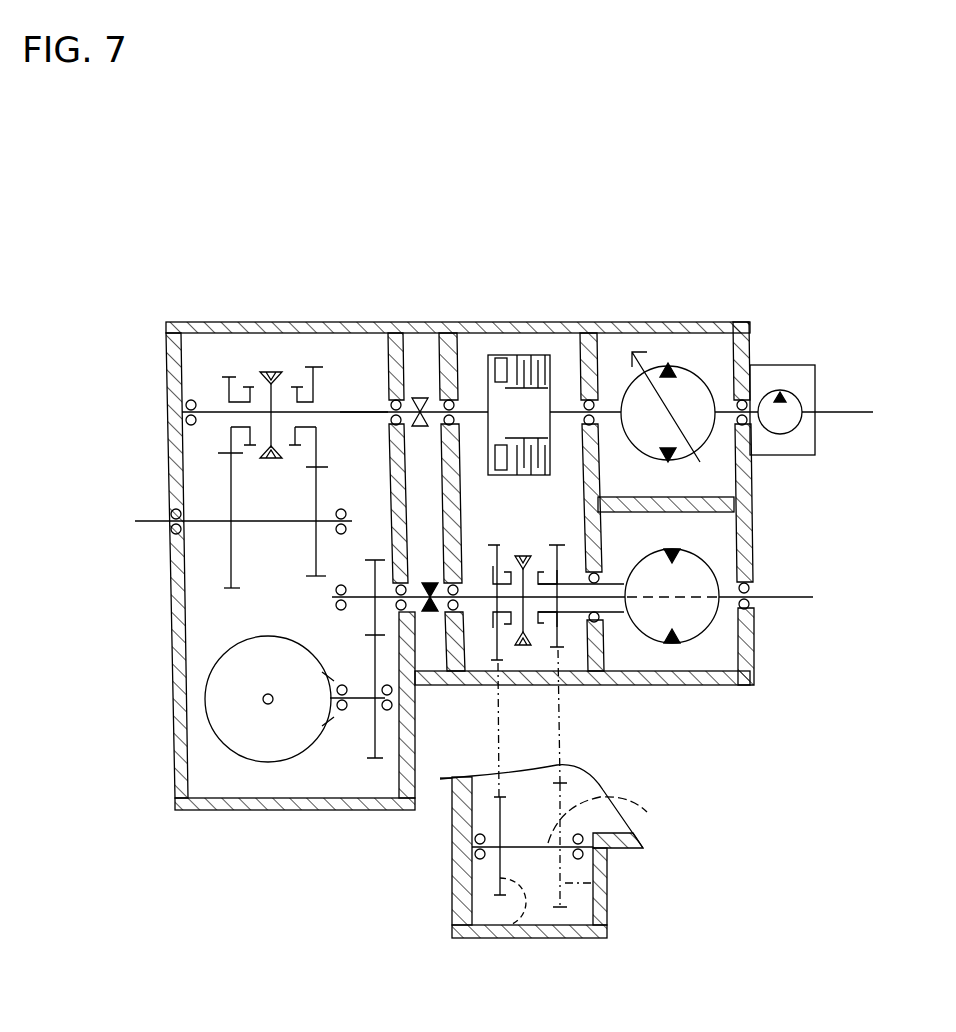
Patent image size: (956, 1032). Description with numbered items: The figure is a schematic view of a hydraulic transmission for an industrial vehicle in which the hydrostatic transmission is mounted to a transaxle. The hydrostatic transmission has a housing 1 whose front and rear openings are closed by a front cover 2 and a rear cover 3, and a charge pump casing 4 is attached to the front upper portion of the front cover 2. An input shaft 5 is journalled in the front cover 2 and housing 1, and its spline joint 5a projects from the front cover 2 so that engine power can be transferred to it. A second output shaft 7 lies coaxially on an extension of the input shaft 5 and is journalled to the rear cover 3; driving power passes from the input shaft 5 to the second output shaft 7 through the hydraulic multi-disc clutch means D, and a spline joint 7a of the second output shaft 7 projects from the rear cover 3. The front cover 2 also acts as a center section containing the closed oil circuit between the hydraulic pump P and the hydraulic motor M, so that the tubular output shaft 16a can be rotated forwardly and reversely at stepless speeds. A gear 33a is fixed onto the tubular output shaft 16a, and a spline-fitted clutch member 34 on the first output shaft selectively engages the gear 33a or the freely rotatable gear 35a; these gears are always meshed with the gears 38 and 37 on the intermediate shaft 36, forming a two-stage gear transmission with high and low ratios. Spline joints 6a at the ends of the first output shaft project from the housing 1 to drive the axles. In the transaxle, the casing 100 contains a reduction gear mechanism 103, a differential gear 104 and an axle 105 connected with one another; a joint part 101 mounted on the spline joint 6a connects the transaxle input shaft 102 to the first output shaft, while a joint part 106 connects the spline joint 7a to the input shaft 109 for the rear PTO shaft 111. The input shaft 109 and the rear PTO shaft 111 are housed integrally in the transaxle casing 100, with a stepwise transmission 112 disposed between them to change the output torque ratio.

The housing 1 is at (570, 330).
The front cover 2 is at (742, 330).
The rear cover 3 is at (444, 360).
The charge pump casing 4 is at (790, 365).
The input shaft 5 is at (605, 400).
The spline joint 5a is at (849, 408).
The spline joint 6a is at (445, 615).
The second output shaft 7 is at (470, 400).
The spline joint 7a is at (420, 396).
The hydraulic pump P is at (680, 362).
The hydraulic motor M is at (712, 568).
The clutch means D is at (525, 340).
The tubular output shaft 16a is at (612, 618).
The gear 33a is at (550, 546).
The clutch member 34 is at (530, 650).
The gear 35a is at (487, 540).
The intermediate shaft 36 is at (647, 812).
The gear 37 is at (595, 883).
The gear 38 is at (512, 940).
The transaxle casing 100 is at (265, 812).
The joint part 101 is at (430, 585).
The input shaft 102 is at (356, 592).
The reduction gear mechanism 103 is at (363, 757).
The differential gear 104 is at (203, 751).
The axle 105 is at (268, 712).
The joint part 106 is at (416, 395).
The input shaft 109 is at (355, 400).
The rear PTO shaft 111 is at (140, 521).
The stepwise transmission 112 is at (260, 348).